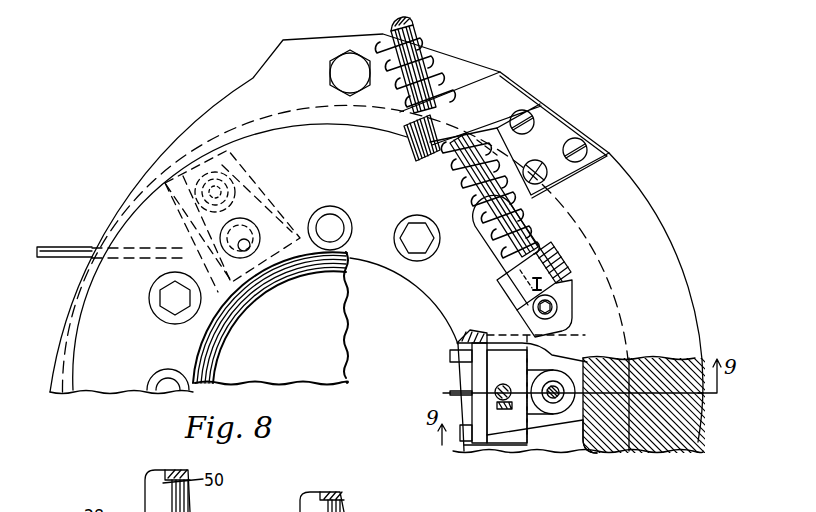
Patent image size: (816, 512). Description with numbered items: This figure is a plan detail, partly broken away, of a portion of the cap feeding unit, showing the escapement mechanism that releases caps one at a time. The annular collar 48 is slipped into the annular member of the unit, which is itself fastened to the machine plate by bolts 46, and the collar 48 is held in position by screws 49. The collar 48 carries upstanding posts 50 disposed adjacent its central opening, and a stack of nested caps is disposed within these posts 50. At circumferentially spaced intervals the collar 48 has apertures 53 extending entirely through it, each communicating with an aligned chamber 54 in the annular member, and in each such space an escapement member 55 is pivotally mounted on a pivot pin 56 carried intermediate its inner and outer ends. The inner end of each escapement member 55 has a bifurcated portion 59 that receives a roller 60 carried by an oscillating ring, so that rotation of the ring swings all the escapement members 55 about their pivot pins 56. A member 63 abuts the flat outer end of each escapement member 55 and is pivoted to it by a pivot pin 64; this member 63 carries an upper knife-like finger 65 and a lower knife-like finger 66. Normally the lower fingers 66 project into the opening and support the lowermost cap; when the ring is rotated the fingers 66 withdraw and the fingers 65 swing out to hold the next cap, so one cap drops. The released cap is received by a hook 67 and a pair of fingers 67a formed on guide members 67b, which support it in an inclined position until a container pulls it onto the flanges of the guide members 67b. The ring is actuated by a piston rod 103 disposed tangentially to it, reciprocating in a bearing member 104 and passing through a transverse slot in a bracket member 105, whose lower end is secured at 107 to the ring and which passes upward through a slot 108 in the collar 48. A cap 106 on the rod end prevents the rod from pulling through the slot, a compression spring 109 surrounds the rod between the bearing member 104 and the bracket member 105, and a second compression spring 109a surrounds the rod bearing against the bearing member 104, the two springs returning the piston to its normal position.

The bolts 46 is at (331, 72).
The annular collar 48 is at (100, 323).
The screws 49 is at (430, 255).
The upstanding posts 50 is at (166, 380).
The apertures or notches 53 is at (487, 445).
The chamber 54 is at (560, 434).
The escapement member 55 is at (501, 350).
The pivot pin 56 is at (495, 392).
The bifurcated portion 59 is at (580, 425).
The roller 60 is at (568, 390).
The member 63 is at (478, 340).
The pivot pin 64 is at (514, 440).
The upper knife-like finger 65 is at (463, 443).
The lower knife-like finger 66 is at (457, 355).
The hook 67 is at (450, 393).
The fingers 67a is at (320, 265).
The guide members 67b is at (50, 257).
The piston rod 103 is at (402, 113).
The bearing member 104 is at (408, 140).
The bracket member 105 is at (510, 282).
The cap 106 is at (545, 284).
The securing point 107 is at (557, 307).
The slot 108 is at (480, 230).
The compression spring 109 is at (467, 185).
The compression spring 109a is at (440, 73).